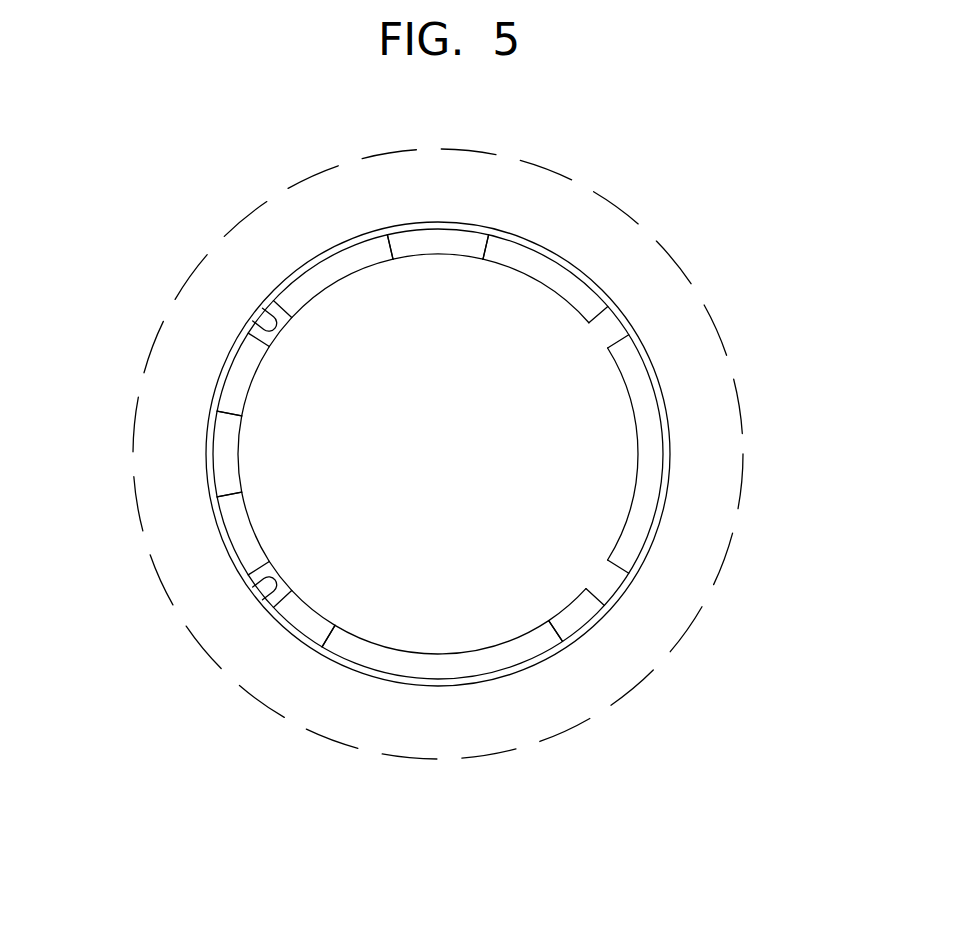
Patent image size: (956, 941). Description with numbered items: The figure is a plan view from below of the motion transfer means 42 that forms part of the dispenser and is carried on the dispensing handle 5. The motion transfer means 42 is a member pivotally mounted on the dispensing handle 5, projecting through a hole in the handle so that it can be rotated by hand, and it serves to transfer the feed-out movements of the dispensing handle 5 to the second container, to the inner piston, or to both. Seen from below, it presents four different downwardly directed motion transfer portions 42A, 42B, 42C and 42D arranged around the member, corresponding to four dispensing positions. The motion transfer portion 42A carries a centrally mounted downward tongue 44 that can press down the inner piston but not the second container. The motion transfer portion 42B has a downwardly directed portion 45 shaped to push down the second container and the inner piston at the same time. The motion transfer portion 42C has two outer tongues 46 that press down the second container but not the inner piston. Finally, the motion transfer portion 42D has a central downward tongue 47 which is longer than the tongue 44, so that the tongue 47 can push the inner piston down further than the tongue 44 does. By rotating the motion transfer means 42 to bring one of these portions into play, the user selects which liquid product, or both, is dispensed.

The dispensing handle 5 is at (547, 692).
The motion transfer means 42 is at (597, 392).
The motion transfer portion 42A is at (508, 252).
The motion transfer portion 42B is at (647, 520).
The motion transfer portion 42C is at (365, 658).
The motion transfer portion 42D is at (228, 518).
The tongue 44 is at (437, 240).
The downwardly directed portion 45 is at (648, 453).
The outer tongues 46 is at (582, 613).
The tongue 47 is at (220, 455).